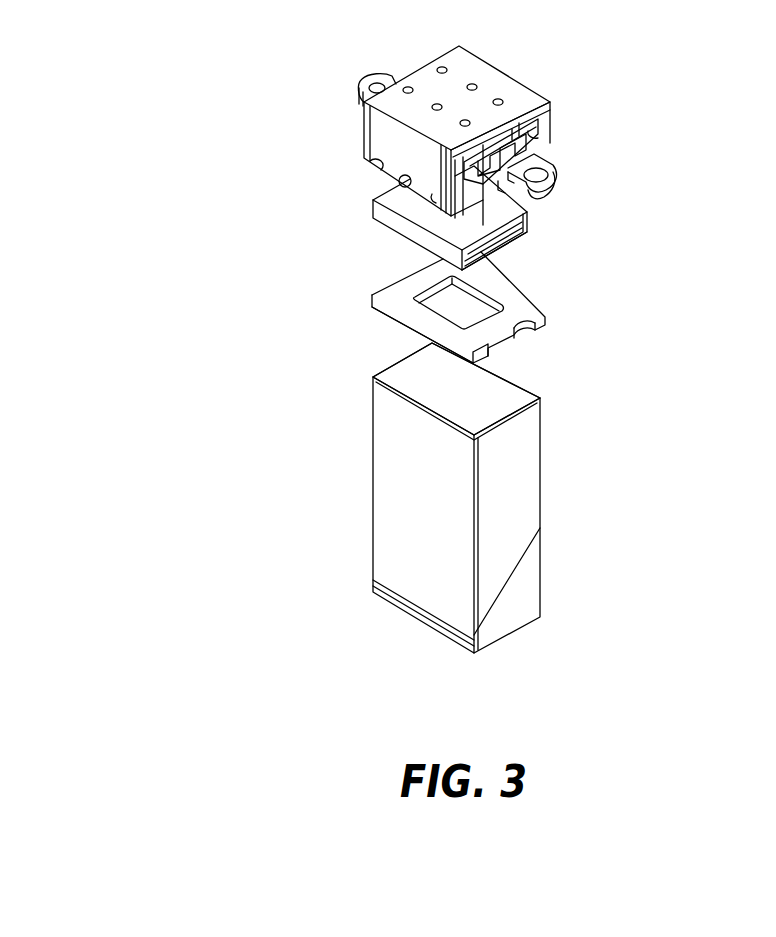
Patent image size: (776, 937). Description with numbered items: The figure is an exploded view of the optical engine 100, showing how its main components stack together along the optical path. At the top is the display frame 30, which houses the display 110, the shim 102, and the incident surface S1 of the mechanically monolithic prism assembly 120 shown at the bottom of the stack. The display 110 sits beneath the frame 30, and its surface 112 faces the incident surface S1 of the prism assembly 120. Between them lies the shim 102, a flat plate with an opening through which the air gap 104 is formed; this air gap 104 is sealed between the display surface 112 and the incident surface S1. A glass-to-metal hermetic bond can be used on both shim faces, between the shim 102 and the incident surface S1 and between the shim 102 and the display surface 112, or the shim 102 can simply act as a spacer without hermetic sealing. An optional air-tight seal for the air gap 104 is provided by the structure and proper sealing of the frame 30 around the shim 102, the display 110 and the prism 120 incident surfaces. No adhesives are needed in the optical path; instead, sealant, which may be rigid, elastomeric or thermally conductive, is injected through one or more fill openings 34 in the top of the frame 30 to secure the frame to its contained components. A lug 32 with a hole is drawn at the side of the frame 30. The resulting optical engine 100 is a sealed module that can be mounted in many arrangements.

The display frame 30 is at (360, 135).
The mounting lug 32 is at (562, 152).
The fill openings 34 is at (555, 48).
The optical engine 100 is at (668, 512).
The shim 102 is at (532, 330).
The air gap 104 is at (448, 308).
The display 110 is at (373, 220).
The surface of display 112 is at (528, 233).
The prism assembly 120 is at (370, 440).
The incident surface S1 is at (400, 365).